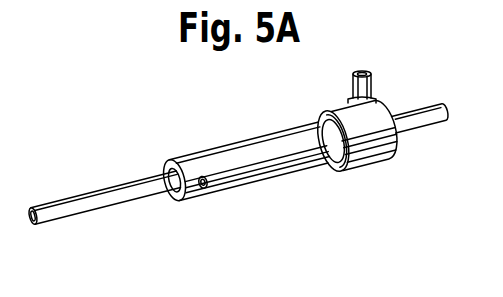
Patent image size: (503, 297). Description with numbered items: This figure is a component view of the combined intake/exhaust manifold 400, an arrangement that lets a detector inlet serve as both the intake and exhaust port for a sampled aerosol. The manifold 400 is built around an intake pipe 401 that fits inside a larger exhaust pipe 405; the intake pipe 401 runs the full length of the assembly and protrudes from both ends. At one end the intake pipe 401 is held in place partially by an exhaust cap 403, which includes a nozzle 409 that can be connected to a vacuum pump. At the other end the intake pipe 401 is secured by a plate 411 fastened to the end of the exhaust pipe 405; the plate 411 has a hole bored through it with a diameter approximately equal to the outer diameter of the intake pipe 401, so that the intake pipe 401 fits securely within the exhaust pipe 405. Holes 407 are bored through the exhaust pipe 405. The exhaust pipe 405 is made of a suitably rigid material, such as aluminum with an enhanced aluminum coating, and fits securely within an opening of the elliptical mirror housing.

The combined intake/exhaust manifold 400 is at (158, 112).
The intake pipe 401 is at (85, 190).
The exhaust cap 403 is at (375, 163).
The exhaust pipe 405 is at (282, 132).
The holes 407 is at (210, 190).
The nozzle 409 is at (350, 80).
The plate 411 is at (172, 200).